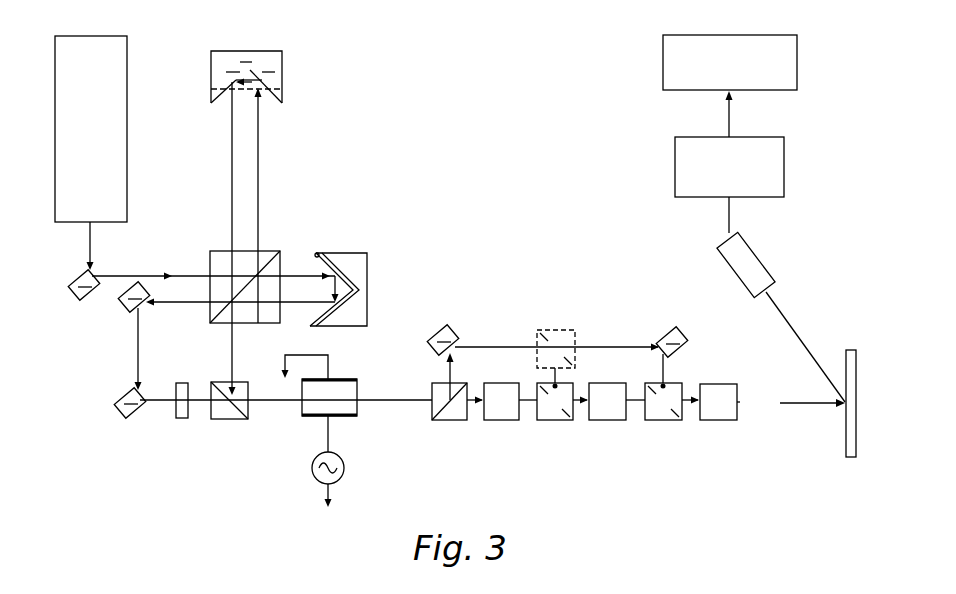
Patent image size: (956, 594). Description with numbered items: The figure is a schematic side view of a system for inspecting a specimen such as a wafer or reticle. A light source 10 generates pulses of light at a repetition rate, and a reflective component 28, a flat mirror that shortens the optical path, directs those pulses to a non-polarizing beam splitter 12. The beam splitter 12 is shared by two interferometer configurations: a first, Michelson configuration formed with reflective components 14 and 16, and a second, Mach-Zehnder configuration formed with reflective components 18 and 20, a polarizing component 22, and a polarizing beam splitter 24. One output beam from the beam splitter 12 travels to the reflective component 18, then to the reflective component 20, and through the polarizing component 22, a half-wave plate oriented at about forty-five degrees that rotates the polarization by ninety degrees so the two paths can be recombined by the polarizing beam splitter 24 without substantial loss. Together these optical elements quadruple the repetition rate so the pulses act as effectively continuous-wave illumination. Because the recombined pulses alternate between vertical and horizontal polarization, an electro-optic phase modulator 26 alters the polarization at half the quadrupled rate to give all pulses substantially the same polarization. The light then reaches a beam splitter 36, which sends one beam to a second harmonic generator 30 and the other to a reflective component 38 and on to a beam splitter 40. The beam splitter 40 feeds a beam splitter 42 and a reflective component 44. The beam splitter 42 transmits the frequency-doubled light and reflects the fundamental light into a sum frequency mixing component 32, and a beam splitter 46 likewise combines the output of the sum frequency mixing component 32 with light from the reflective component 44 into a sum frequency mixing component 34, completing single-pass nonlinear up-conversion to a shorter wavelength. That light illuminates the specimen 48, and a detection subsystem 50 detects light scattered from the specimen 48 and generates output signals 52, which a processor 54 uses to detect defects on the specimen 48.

The light source 10 is at (129, 152).
The beam splitter 12 is at (262, 268).
The reflective component 14 is at (368, 275).
The reflective component 16 is at (284, 78).
The reflective component 18 is at (126, 307).
The reflective component 20 is at (117, 412).
The polarizing component 22 is at (180, 420).
The polarizing beam splitter 24 is at (236, 422).
The electro-optic phase modulator 26 is at (352, 380).
The reflective component 28 is at (72, 292).
The second harmonic generator 30 is at (495, 423).
The sum frequency mixing component 32 is at (607, 423).
The sum frequency mixing component 34 is at (720, 423).
The beam splitter 36 is at (440, 423).
The reflective component 38 is at (430, 333).
The beam splitter 40 is at (546, 331).
The beam splitter 42 is at (556, 423).
The reflective component 44 is at (686, 336).
The beam splitter 46 is at (663, 423).
The specimen 48 is at (857, 384).
The detection subsystem 50 is at (768, 264).
The output signals 52 is at (786, 170).
The processor 54 is at (800, 63).